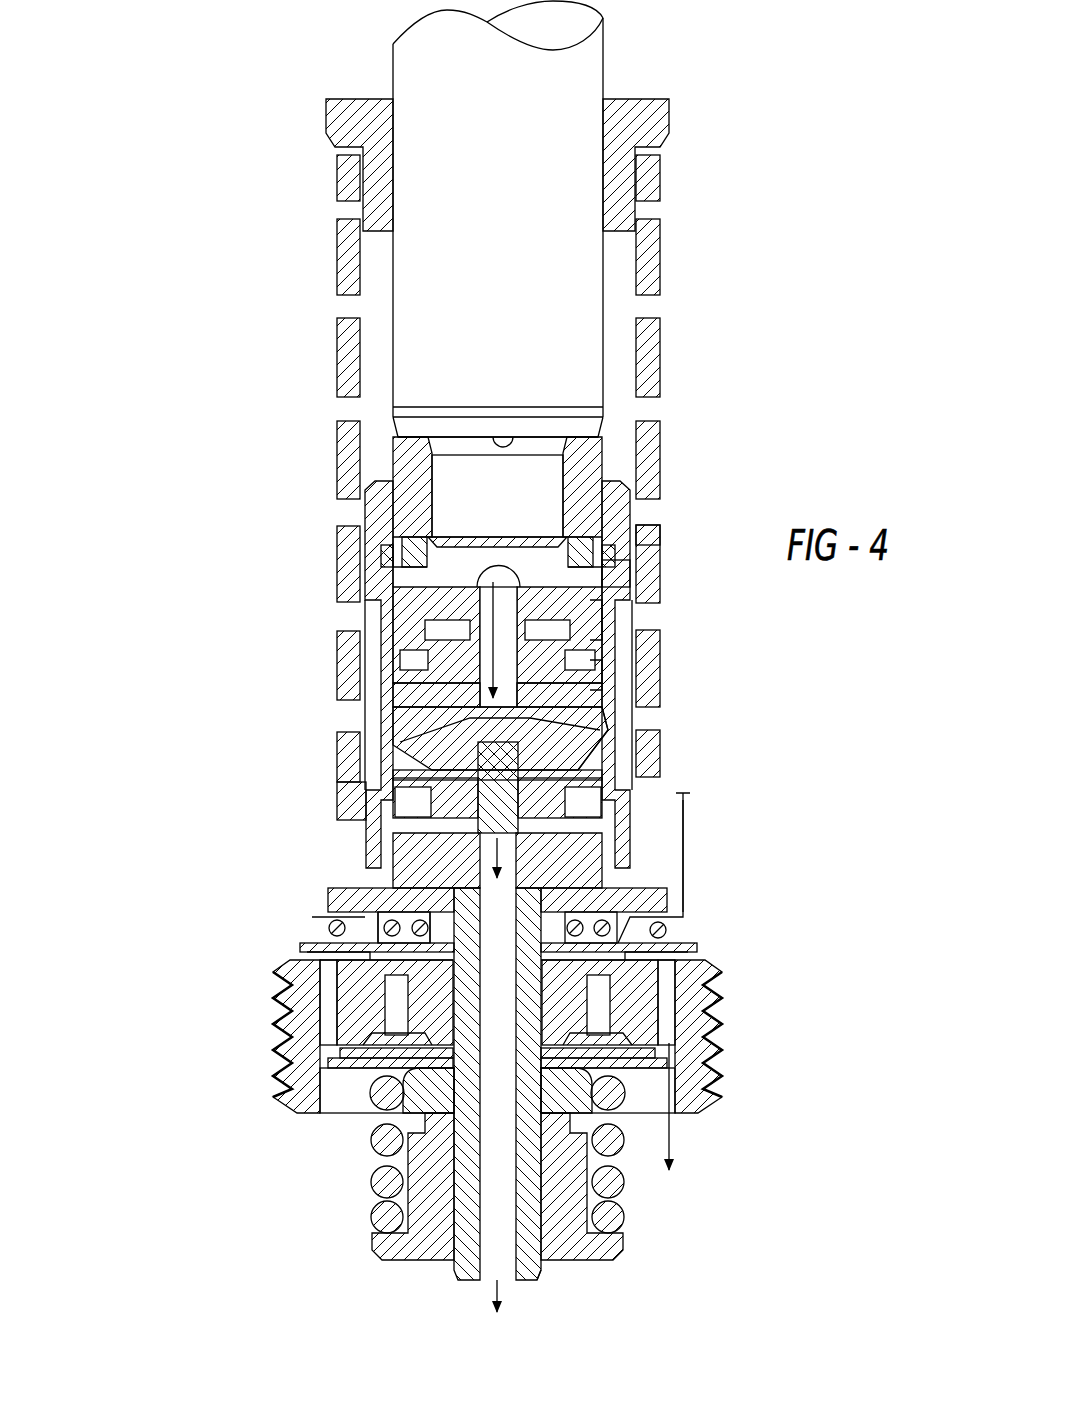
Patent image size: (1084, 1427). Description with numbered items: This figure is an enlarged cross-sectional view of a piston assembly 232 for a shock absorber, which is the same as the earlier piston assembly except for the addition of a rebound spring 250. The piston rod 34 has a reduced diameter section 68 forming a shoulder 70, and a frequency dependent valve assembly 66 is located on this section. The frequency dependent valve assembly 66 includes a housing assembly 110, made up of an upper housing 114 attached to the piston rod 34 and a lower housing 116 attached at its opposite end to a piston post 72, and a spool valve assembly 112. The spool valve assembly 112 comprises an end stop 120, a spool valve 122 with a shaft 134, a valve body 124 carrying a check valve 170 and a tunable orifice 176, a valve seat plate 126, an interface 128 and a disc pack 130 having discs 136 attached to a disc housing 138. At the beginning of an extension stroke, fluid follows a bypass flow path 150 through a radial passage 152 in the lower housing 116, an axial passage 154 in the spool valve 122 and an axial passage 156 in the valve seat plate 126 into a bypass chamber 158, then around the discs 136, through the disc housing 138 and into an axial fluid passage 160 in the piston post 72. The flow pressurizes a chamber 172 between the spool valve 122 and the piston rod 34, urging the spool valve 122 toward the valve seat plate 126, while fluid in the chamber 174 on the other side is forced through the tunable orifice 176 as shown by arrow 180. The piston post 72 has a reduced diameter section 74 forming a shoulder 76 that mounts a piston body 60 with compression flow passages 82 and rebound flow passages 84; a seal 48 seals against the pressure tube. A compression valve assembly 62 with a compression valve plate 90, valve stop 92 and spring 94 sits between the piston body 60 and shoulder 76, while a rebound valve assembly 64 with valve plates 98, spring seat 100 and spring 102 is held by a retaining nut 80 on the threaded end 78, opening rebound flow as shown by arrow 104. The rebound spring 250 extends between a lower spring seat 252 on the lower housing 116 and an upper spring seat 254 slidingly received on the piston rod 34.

The piston rod 34 is at (488, 349).
The reduced diameter section 68 is at (488, 512).
The shoulder 70 is at (503, 443).
The upper spring seat 254 is at (655, 120).
The rebound spring 250 is at (648, 240).
The upper housing 114 is at (603, 443).
The lower housing 116 is at (620, 493).
The end stop 120 is at (632, 540).
The spool valve assembly 112 is at (640, 600).
The axial passage 154 is at (625, 640).
The chamber 174 is at (600, 650).
The shaft 134 is at (590, 645).
The axial passage 156 is at (575, 660).
The arrow 180 is at (620, 680).
The discs 136 is at (607, 735).
The disc housing 138 is at (548, 806).
The arrow 104 is at (683, 795).
The lower spring seat 252 is at (683, 818).
The shoulder 76 is at (580, 890).
The valve stop 92 is at (650, 900).
The compression valve plate 90 is at (697, 947).
The piston body 60 is at (693, 980).
The compression flow passages 82 is at (700, 1000).
The seal 48 is at (707, 1033).
The valve plates 98 is at (703, 1070).
The spring seat 100 is at (648, 1072).
The threaded end 78 is at (530, 1180).
The spring 102 is at (612, 1215).
The retaining nut 80 is at (615, 1243).
The piston post 72 is at (532, 1263).
The axial fluid passage 160 is at (490, 1245).
The rebound valve assembly 64 is at (340, 1150).
The piston assembly 232 is at (222, 738).
The compression valve assembly 62 is at (318, 903).
The spring 94 is at (330, 942).
The reduced diameter section 74 is at (293, 957).
The rebound flow passages 84 is at (400, 1005).
The bypass flow path 150 is at (361, 511).
The chamber 172 is at (478, 560).
The radial passage 152 is at (384, 565).
The spool valve 122 is at (440, 600).
The check valve 170 is at (430, 650).
The tunable orifice 176 is at (420, 660).
The valve body 124 is at (400, 672).
The frequency dependent valve assembly 66 is at (338, 698).
The valve seat plate 126 is at (395, 725).
The bypass chamber 158 is at (400, 735).
The interface 128 is at (400, 770).
The disc pack 130 is at (480, 800).
The housing assembly 110 is at (788, 394).